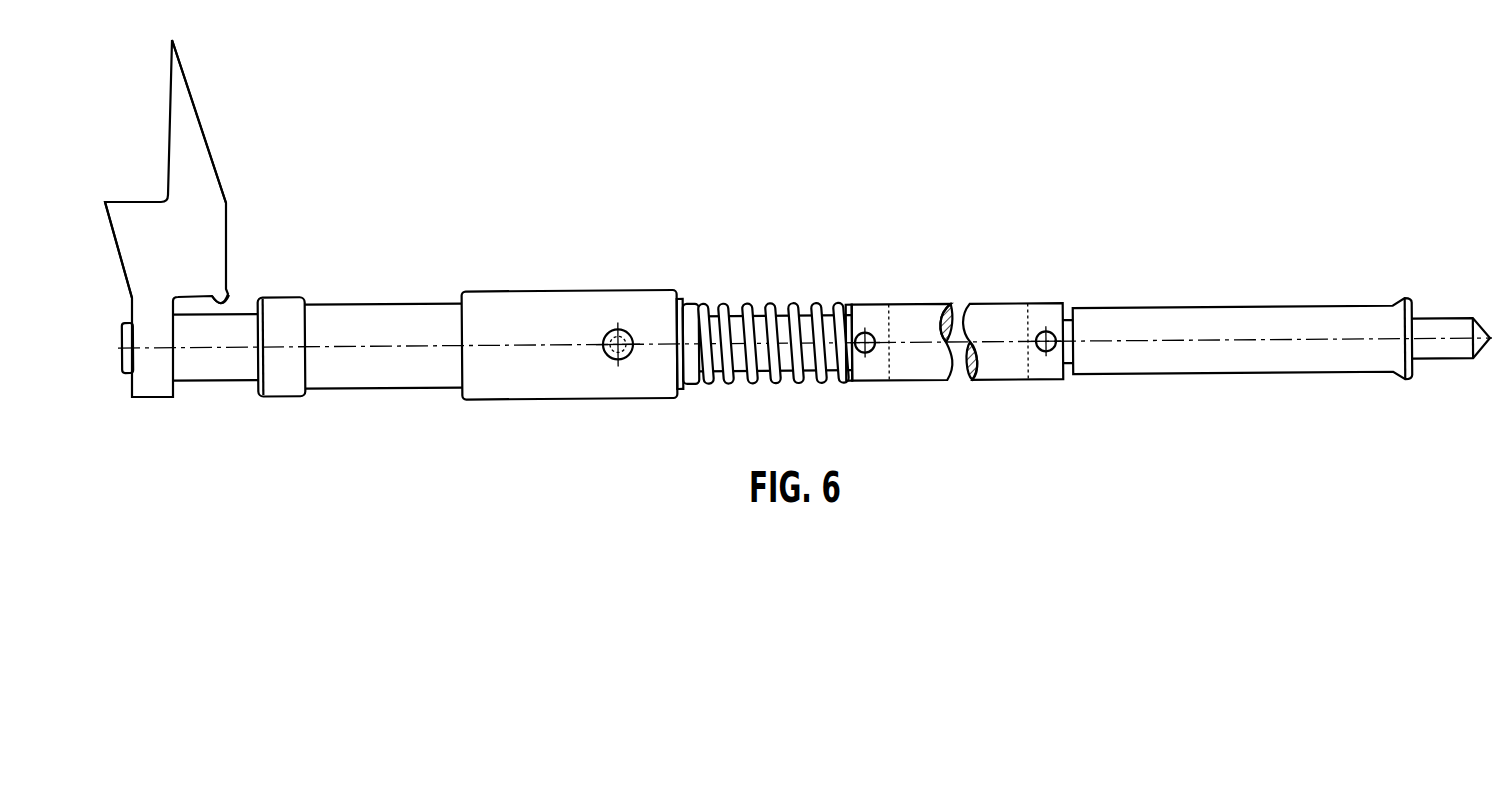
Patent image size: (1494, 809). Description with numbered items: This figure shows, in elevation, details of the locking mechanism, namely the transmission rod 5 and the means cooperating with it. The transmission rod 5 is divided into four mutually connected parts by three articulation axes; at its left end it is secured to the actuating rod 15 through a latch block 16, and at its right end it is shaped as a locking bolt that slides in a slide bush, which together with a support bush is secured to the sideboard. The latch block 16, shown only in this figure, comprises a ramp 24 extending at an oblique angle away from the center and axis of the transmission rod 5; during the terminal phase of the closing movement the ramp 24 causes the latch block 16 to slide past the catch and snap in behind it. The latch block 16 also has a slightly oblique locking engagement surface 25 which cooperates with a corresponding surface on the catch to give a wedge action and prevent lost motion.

The transmission rod 5 is at (838, 173).
The actuating rod 15 is at (149, 128).
The latch block 16 is at (185, 248).
The ramp 24 is at (213, 166).
The locking engagement surface 25 is at (229, 295).